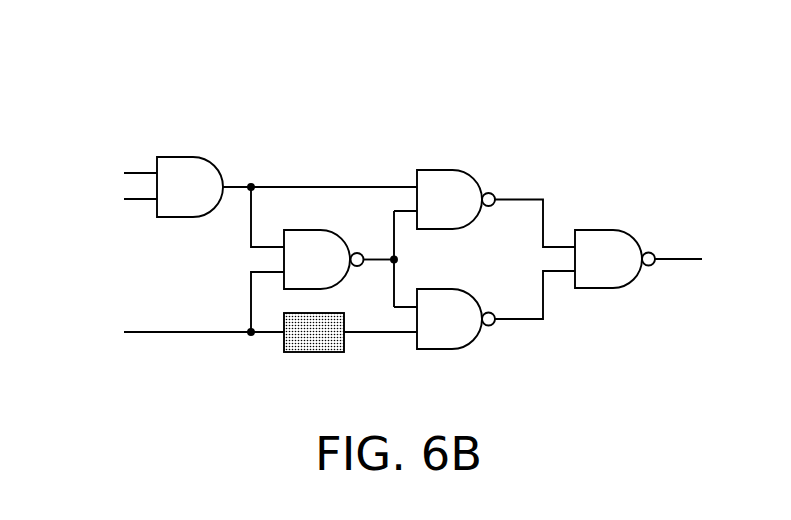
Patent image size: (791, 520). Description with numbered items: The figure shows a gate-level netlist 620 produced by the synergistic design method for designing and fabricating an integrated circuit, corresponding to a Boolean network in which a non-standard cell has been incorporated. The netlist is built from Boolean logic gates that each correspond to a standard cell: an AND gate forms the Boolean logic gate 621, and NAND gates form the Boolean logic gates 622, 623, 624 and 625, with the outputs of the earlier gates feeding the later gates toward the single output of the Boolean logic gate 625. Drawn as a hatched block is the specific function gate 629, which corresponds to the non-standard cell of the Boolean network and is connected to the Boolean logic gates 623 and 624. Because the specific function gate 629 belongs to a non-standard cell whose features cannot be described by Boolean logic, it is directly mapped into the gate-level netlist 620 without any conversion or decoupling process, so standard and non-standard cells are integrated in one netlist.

The gate-level netlist 620 is at (123, 90).
The Boolean logic gate 621 is at (192, 156).
The Boolean logic gate 622 is at (445, 169).
The Boolean logic gate 623 is at (315, 229).
The Boolean logic gate 624 is at (445, 288).
The Boolean logic gate 625 is at (605, 229).
The specific function gate 629 is at (313, 352).